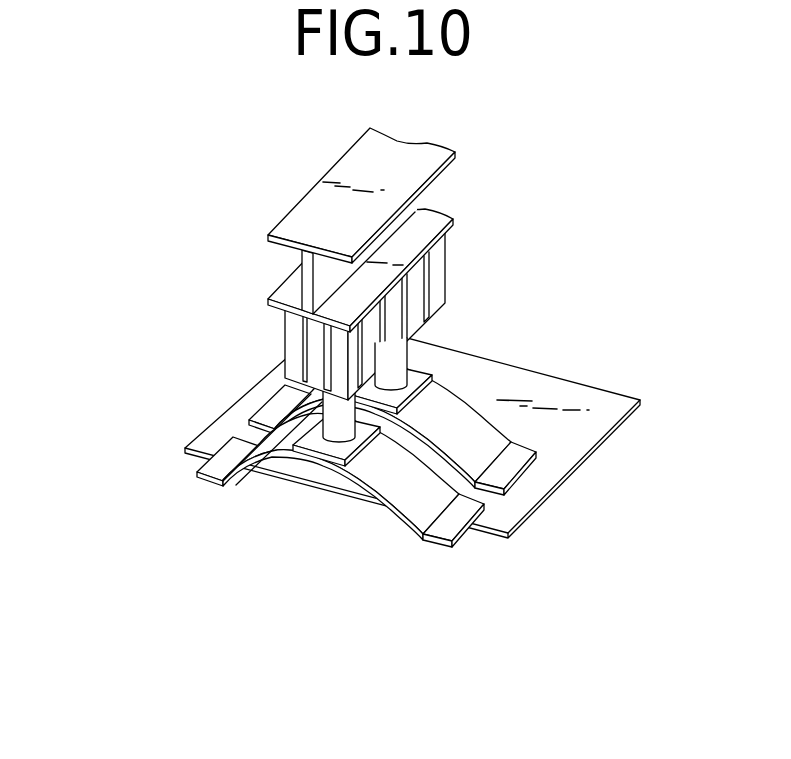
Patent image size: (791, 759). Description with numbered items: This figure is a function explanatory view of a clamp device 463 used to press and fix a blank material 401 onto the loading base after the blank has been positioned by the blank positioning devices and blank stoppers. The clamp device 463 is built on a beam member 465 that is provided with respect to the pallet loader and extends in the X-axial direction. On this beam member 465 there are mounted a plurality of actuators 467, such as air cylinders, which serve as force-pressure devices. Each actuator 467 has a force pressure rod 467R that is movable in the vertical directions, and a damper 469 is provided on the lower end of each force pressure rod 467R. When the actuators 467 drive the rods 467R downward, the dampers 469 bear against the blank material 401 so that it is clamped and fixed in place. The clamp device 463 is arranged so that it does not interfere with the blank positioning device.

The blank material 401 is at (620, 393).
The clamp device 463 is at (317, 287).
The beam member 465 is at (312, 195).
The actuator 467 is at (428, 279).
The force pressure rod 467R is at (333, 421).
The damper 469 is at (492, 430).